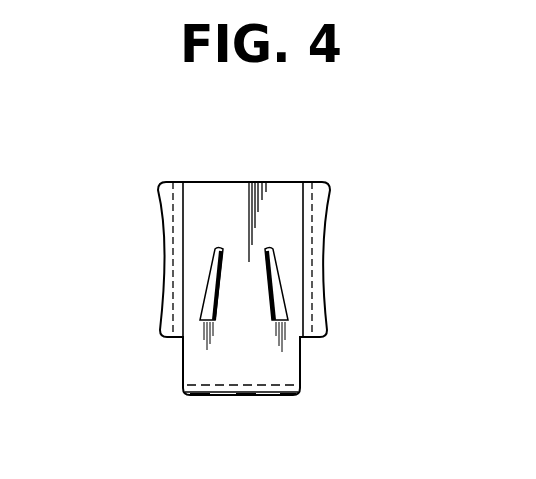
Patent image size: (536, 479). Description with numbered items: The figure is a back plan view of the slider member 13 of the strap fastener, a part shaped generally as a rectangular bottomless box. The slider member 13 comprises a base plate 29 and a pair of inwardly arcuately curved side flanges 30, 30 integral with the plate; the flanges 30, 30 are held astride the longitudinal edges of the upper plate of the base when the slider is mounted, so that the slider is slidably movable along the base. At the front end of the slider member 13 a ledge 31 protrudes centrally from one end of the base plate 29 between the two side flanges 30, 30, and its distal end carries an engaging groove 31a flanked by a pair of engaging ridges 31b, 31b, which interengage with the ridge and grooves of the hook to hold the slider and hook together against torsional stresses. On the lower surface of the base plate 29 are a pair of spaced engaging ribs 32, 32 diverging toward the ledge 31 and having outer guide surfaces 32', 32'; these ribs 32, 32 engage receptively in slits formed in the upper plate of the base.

The slider member 13 is at (287, 180).
The base plate 29 is at (226, 186).
The side flange 30 is at (165, 237).
The ledge 31 is at (291, 364).
The engaging groove 31a is at (246, 398).
The engaging ridge 31b is at (206, 398).
The engaging rib 32 is at (241, 300).
The outer guide surface 32' is at (244, 286).